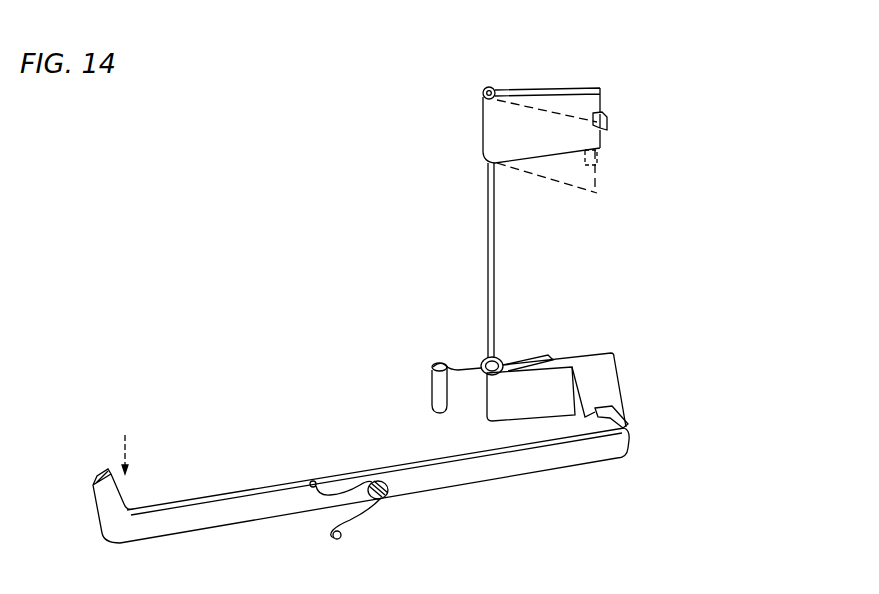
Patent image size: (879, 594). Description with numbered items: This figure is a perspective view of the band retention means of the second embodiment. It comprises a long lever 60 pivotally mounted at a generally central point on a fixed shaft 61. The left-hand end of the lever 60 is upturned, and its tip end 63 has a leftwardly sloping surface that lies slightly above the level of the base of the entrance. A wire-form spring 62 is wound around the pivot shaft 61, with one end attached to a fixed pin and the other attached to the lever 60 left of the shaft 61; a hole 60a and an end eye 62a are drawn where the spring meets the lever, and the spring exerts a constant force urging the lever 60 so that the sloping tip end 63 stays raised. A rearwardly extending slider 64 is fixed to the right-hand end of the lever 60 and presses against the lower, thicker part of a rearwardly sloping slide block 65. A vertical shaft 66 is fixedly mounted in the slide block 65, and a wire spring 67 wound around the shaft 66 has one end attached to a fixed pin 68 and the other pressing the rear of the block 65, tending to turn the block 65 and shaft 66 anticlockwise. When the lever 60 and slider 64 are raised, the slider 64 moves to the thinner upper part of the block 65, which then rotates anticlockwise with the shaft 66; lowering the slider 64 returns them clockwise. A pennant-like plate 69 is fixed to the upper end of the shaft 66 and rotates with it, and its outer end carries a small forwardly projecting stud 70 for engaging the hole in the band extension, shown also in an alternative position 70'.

The lever 60 is at (498, 473).
The hole in slide rail 60a is at (312, 480).
The fixed shaft 61 is at (382, 498).
The wire-form spring 62 is at (358, 518).
The spring leg eye 62a is at (332, 537).
The tip end 63 is at (103, 477).
The slider 64 is at (620, 430).
The slide block 65 is at (603, 388).
The vertical shaft 66 is at (495, 263).
The wire spring 67 is at (466, 370).
The fixed pin 68 is at (441, 398).
The pennant-like plate 69 is at (557, 92).
The stud 70 is at (628, 112).
The tab in alternative position 70' is at (622, 165).